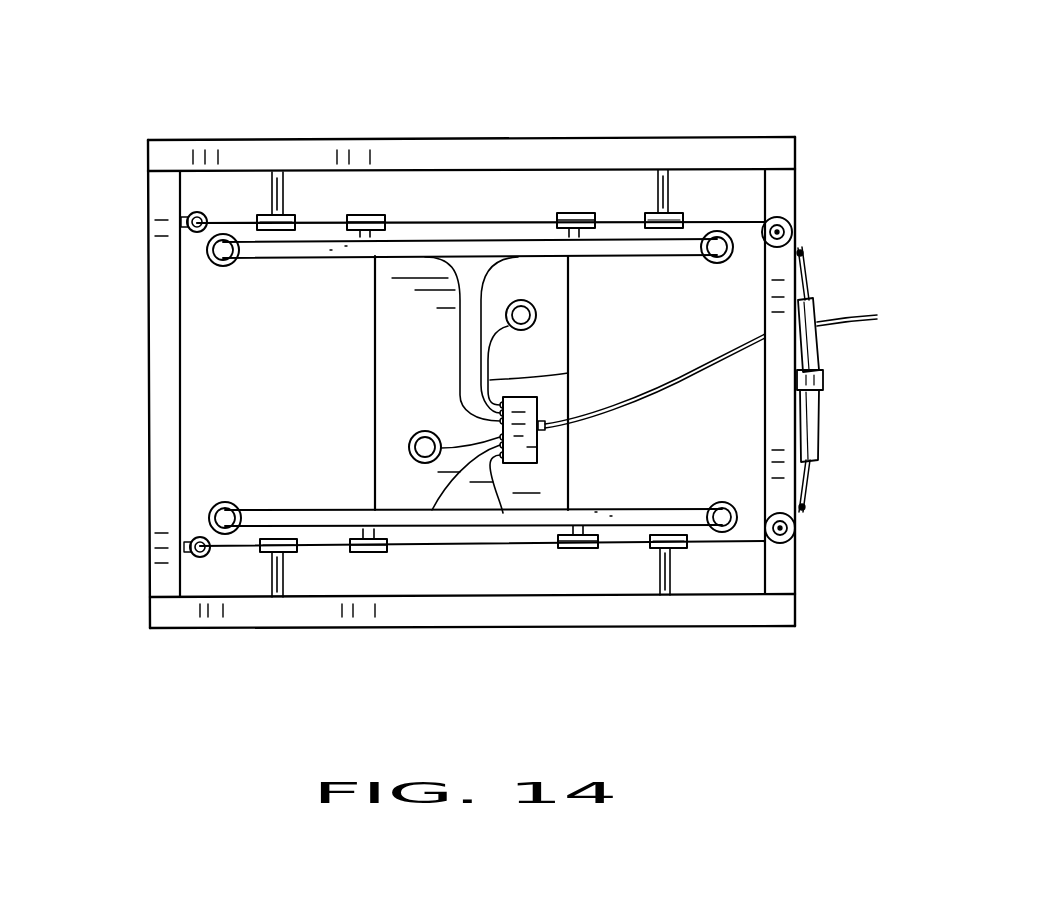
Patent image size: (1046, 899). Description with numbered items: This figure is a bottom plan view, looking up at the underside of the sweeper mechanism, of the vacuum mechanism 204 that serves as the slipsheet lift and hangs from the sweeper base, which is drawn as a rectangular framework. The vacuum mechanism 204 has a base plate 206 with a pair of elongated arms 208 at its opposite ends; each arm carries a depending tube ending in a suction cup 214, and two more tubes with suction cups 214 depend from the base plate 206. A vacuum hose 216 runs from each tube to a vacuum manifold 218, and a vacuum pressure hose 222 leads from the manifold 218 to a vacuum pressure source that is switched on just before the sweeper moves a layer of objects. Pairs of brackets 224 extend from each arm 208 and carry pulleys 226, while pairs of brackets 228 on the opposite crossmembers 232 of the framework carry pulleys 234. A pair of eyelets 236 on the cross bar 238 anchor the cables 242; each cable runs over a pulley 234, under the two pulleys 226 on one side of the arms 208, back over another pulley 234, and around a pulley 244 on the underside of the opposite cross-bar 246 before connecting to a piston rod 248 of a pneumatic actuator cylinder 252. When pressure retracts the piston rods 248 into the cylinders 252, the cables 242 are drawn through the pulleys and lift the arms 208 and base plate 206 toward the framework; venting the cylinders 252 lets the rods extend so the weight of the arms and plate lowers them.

The vacuum mechanism 204 is at (798, 112).
The base plate 206 is at (553, 353).
The elongated arms 208 is at (322, 262).
The suction cup 214 is at (208, 250).
The vacuum hose 216 is at (457, 330).
The vacuum manifold 218 is at (538, 455).
The vacuum pressure hose 222 is at (638, 401).
The brackets 224 is at (392, 236).
The pulleys 226 is at (365, 213).
The brackets 228 is at (284, 192).
The crossmembers 232 is at (429, 152).
The pulleys 234 is at (256, 214).
The eyelets 236 is at (192, 213).
The cross bar 238 is at (148, 387).
The cables 242 is at (472, 222).
The pulley 244 is at (791, 222).
The cross-bar 246 is at (785, 582).
The piston rods 248 is at (808, 283).
The cylinders 252 is at (822, 354).